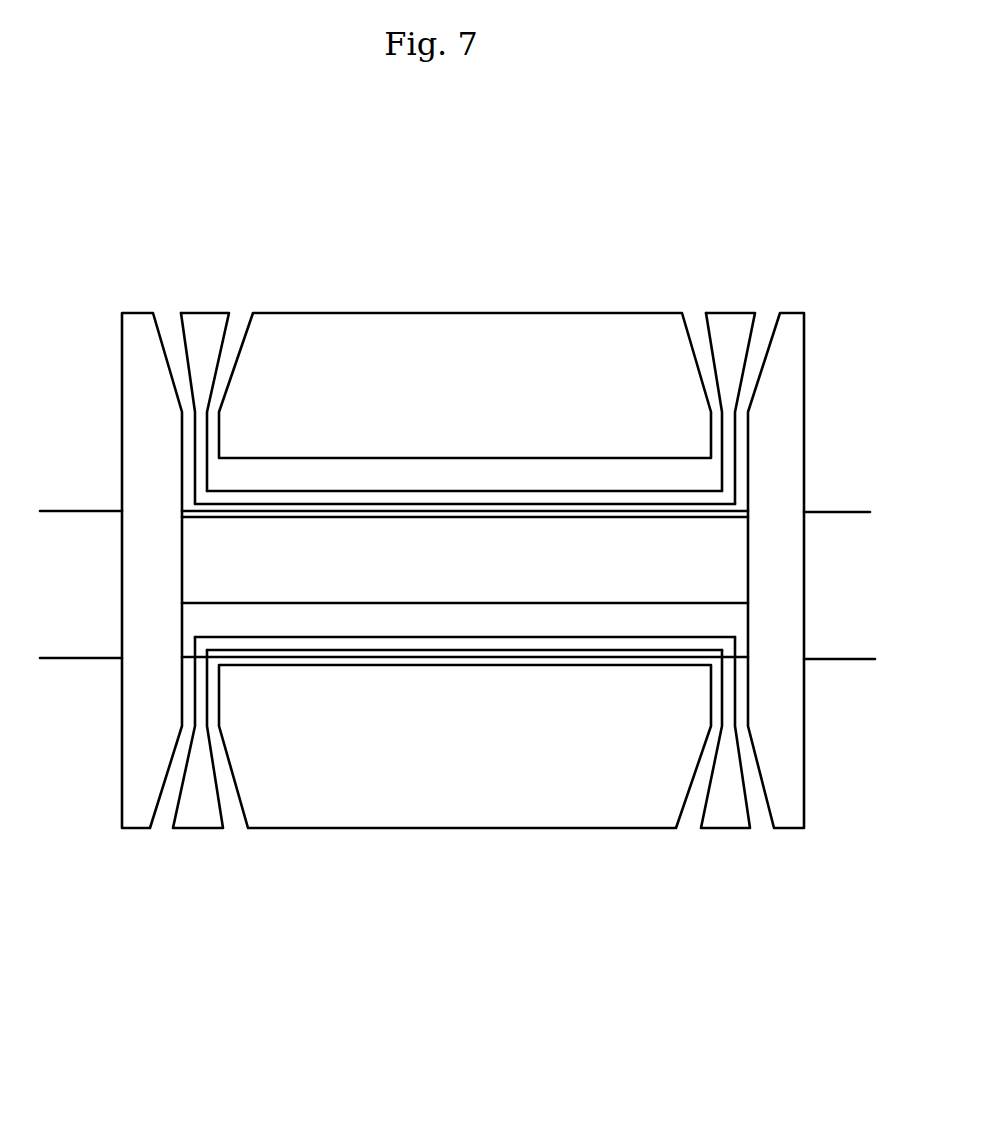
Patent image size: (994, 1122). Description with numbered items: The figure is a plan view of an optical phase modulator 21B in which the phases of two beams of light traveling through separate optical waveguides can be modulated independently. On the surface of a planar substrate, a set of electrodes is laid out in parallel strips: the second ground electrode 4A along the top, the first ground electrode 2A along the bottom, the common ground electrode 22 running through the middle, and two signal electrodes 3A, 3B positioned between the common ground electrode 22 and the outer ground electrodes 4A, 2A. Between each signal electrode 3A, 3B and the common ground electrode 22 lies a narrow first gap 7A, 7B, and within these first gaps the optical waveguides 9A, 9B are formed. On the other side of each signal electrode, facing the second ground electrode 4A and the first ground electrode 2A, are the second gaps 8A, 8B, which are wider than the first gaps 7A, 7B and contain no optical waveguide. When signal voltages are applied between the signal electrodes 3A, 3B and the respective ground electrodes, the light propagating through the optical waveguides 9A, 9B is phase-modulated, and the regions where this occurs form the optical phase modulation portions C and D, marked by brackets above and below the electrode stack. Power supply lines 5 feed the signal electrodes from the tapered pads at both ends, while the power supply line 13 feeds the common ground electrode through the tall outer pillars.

The optical phase modulator 21B is at (824, 318).
The power supply line to the common ground electrode 13 is at (140, 327).
The power supply lines to the signal electrodes 5 is at (200, 327).
The second ground electrode 4A is at (582, 360).
The first ground electrode 2A is at (465, 746).
The common ground electrode 22 is at (586, 569).
The signal electrode 3A is at (473, 498).
The signal electrode 3B is at (415, 642).
The first gap 7A is at (627, 503).
The first gap 7B is at (428, 663).
The second gap 8A is at (560, 453).
The second gap 8B is at (448, 598).
The optical waveguide 9A is at (418, 508).
The optical waveguide 9B is at (368, 657).
The optical phase modulation portion C is at (252, 283).
The optical phase modulation portion D is at (247, 858).